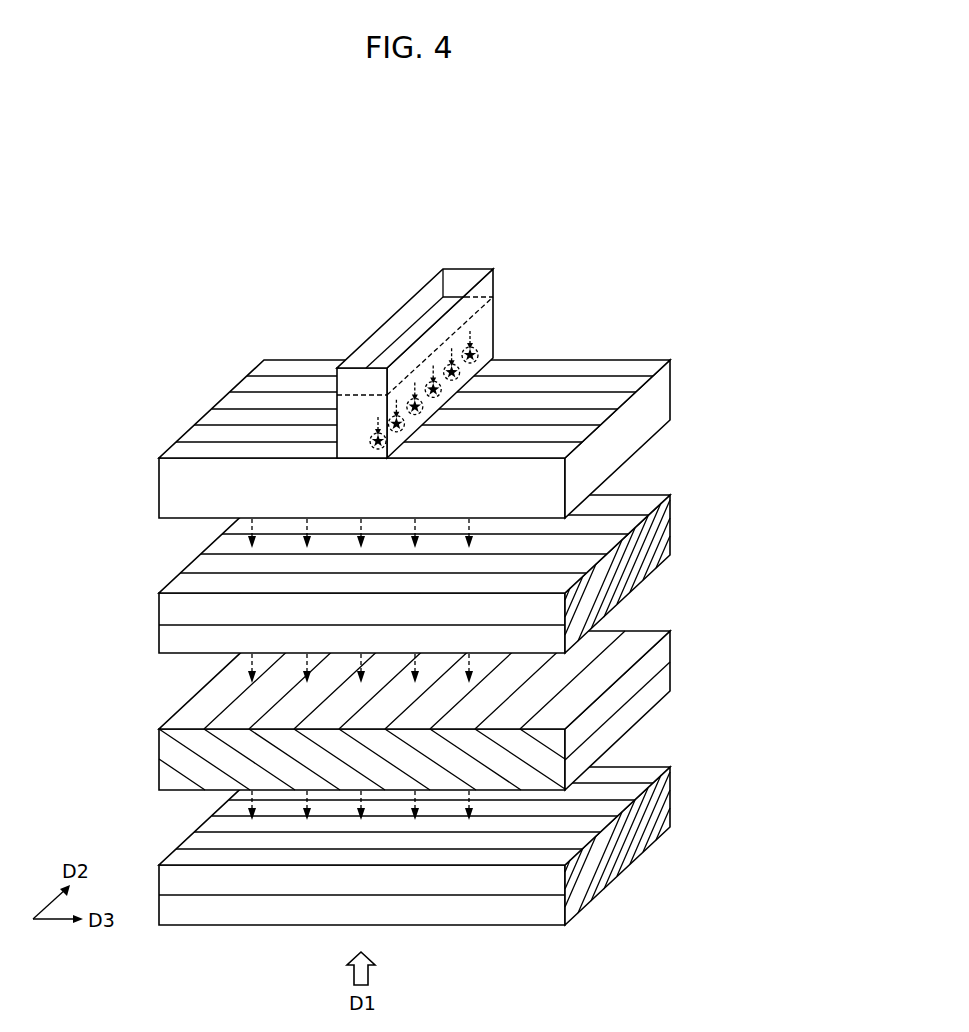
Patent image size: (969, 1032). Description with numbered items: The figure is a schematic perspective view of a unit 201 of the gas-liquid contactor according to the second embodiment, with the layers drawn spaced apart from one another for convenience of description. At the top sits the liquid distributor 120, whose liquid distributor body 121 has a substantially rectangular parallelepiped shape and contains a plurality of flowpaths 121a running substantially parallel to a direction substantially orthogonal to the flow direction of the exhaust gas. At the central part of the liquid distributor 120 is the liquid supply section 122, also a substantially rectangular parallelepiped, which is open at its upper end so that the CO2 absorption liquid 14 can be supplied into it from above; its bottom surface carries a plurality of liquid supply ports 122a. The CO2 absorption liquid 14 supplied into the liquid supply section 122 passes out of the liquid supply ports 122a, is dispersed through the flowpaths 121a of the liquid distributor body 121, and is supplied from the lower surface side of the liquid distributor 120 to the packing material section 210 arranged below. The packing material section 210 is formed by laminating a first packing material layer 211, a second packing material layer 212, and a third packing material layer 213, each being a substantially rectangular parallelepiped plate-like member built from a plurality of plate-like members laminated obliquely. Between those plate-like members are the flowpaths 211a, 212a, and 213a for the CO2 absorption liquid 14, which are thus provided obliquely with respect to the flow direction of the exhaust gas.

The unit 201 is at (646, 236).
The liquid distributor 120 is at (474, 364).
The liquid distributor body 121 is at (474, 412).
The flowpaths 121a is at (283, 372).
The liquid supply section 122 is at (450, 334).
The liquid supply ports 122a is at (478, 360).
The CO2 absorption liquid 14 is at (432, 311).
The packing material section 210 is at (475, 695).
The first packing material layer 211 is at (475, 830).
The flowpaths 211a is at (610, 771).
The second packing material layer 212 is at (475, 695).
The flowpaths 212a is at (637, 638).
The third packing material layer 213 is at (475, 559).
The flowpaths 213a is at (610, 498).